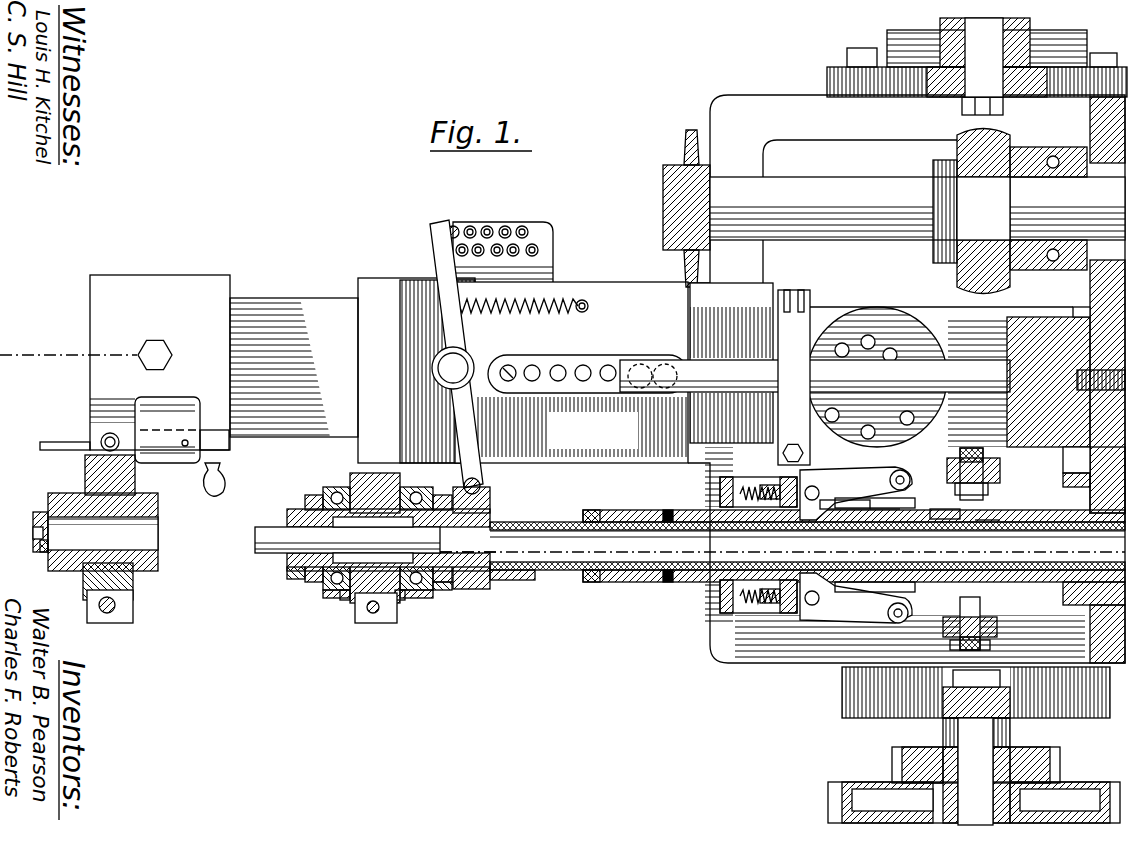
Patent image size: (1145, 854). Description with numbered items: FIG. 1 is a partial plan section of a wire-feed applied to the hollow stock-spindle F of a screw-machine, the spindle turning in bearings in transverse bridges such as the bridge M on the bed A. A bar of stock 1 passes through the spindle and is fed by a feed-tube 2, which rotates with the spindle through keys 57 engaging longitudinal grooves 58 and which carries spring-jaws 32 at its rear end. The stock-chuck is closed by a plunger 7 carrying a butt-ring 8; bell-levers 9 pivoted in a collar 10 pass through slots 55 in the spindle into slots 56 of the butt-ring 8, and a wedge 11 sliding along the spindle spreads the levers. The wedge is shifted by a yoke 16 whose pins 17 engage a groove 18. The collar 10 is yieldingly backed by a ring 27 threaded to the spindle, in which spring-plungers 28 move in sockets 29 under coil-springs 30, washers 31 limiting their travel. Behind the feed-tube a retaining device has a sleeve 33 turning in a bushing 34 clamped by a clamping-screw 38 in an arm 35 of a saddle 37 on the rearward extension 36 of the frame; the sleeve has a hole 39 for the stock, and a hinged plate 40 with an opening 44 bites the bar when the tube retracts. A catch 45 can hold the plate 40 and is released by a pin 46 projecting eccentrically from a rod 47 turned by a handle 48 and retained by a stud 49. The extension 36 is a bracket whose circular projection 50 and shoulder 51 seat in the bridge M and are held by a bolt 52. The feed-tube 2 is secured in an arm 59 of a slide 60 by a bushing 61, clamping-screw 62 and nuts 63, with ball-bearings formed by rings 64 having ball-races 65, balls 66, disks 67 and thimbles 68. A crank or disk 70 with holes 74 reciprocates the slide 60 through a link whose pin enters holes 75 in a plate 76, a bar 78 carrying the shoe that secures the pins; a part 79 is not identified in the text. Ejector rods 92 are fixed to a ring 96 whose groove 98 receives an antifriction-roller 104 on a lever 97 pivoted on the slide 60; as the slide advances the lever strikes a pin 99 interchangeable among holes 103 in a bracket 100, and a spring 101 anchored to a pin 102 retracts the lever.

The bar of stock 1 is at (268, 541).
The feed-tube 2 is at (548, 570).
The plunger 7 is at (945, 520).
The butt-ring 8 is at (880, 512).
The bell-levers 9 is at (850, 478).
The collar 10 is at (815, 486).
The wedge 11 is at (895, 472).
The yoke 16 is at (1000, 470).
The pins 17 is at (985, 466).
The groove 18 is at (990, 490).
The ring 27 is at (752, 475).
The spring-plungers 28 is at (792, 444).
The holes or sockets 29 is at (746, 508).
The coil-springs 30 is at (772, 508).
The washers 31 is at (720, 484).
The spring-jaws 32 is at (470, 542).
The sleeve 33 is at (150, 549).
The bushing 34 is at (130, 592).
The arm 35 is at (134, 606).
The rearward extension 36 is at (299, 312).
The plate or saddle 37 is at (90, 379).
The clamping-screw 38 is at (99, 605).
The hole 39 is at (148, 538).
The plate 40 is at (44, 551).
The opening 44 is at (35, 530).
The catch or button 45 is at (36, 535).
The pin 46 is at (40, 445).
The rod 47 is at (160, 420).
The handle 48 is at (226, 488).
The stud 49 is at (187, 440).
The circular projection 50 is at (1100, 440).
The shoulder 51 is at (1073, 312).
The bolt 52 is at (1094, 370).
The slots 55 is at (868, 502).
The slots 56 is at (835, 510).
The keys 57 is at (620, 508).
The grooves 58 is at (588, 511).
The arm 59 is at (366, 448).
The slide or saddle 60 is at (571, 372).
The bushing 61 is at (358, 614).
The clamping-screw 62 is at (374, 614).
The nuts 63 is at (300, 571).
The rings 64 is at (342, 598).
The V-shaped ball-races 65 is at (356, 480).
The balls 66 is at (333, 493).
The disks 67 is at (311, 500).
The thimbles 68 is at (326, 592).
The crank or disk 70 is at (866, 334).
The holes 74 is at (890, 348).
The holes 75 is at (602, 365).
The plate 76 is at (522, 386).
The bar 78 is at (794, 377).
The rod 79 is at (780, 375).
The rods 92 is at (522, 582).
The ring 96 is at (490, 499).
The lever 97 is at (462, 425).
The groove 98 is at (472, 590).
The pin 99 is at (455, 226).
The bracket 100 is at (545, 226).
The spring 101 is at (520, 316).
The pin 102 is at (588, 306).
The holes 103 is at (505, 245).
The antifriction-roller 104 is at (479, 484).
The bed A is at (722, 650).
The transverse bridge M is at (1068, 478).
The stock-spindle F is at (985, 522).